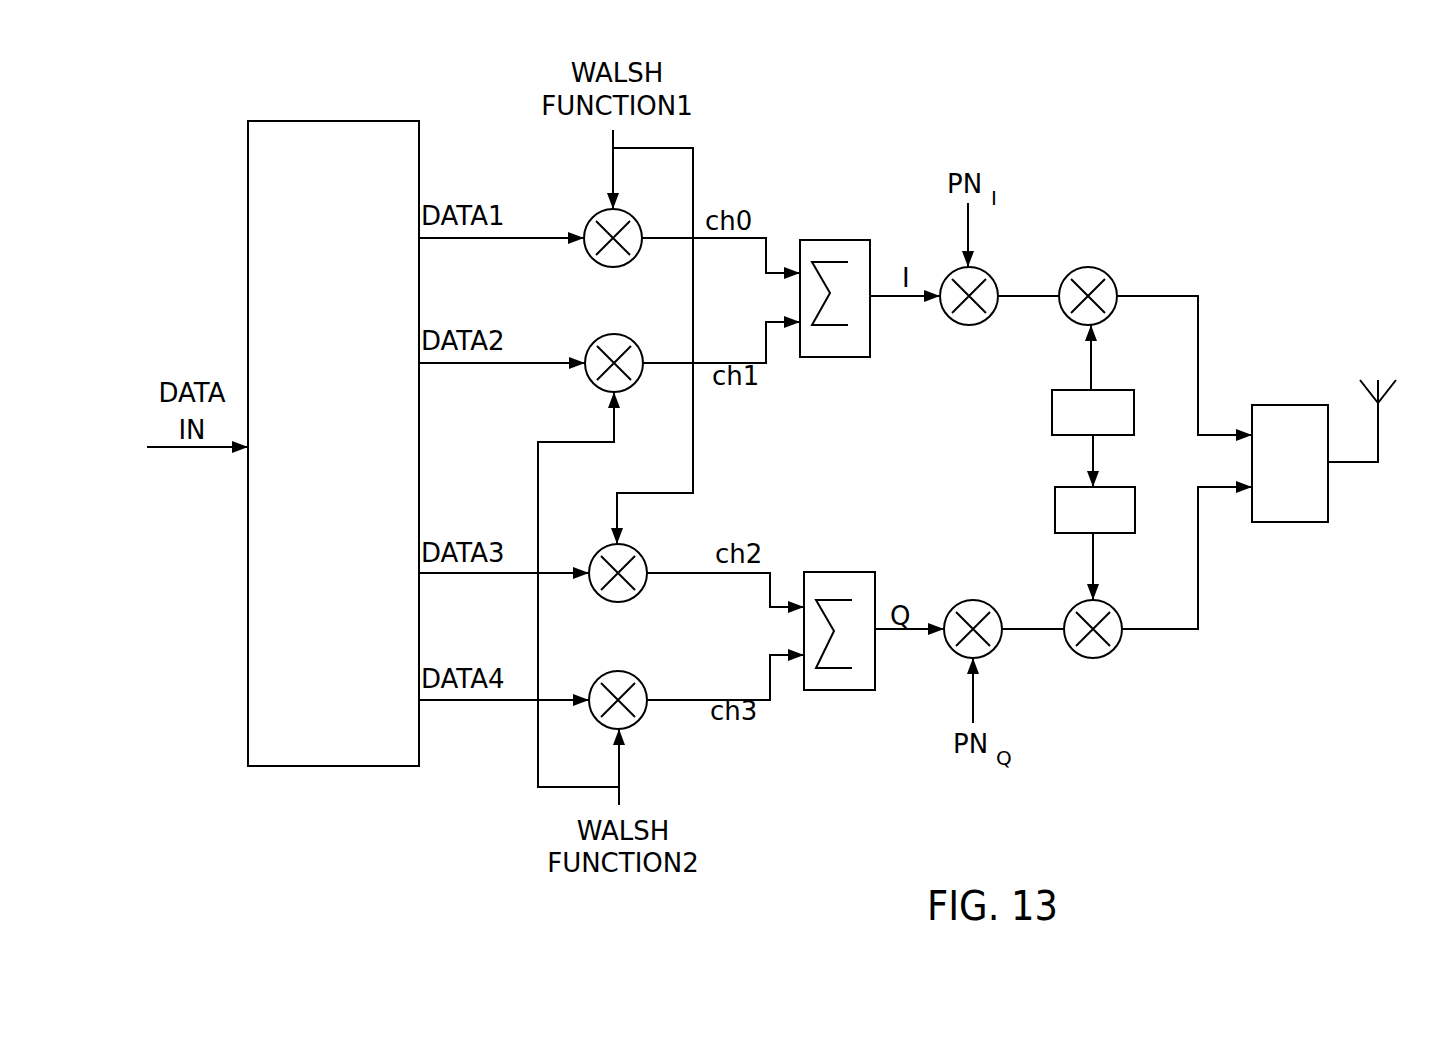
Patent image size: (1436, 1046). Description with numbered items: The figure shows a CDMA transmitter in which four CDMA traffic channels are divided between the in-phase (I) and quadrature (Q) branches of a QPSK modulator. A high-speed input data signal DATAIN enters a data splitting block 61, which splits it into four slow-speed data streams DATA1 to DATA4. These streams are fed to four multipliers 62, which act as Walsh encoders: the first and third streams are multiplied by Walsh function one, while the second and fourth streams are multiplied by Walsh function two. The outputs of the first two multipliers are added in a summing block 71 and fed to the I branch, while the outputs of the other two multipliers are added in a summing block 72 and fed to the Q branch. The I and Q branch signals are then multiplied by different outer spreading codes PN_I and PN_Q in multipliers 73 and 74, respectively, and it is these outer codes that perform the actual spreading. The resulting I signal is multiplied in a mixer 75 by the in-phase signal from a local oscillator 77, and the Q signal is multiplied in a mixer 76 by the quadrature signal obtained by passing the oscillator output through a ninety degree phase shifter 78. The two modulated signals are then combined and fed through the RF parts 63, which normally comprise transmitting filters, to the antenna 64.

The data splitting unit 61 is at (327, 121).
The multipliers 62 is at (636, 215).
The summing block 71 is at (830, 240).
The summing block 72 is at (847, 572).
The multiplier 73 is at (975, 325).
The multiplier 74 is at (985, 600).
The I mixer 75 is at (1085, 267).
The Q mixer 76 is at (1093, 658).
The local oscillator 77 is at (1052, 412).
The 90 degree phase shifter 78 is at (1055, 510).
The RF parts 63 is at (1298, 405).
The antenna 64 is at (1380, 452).